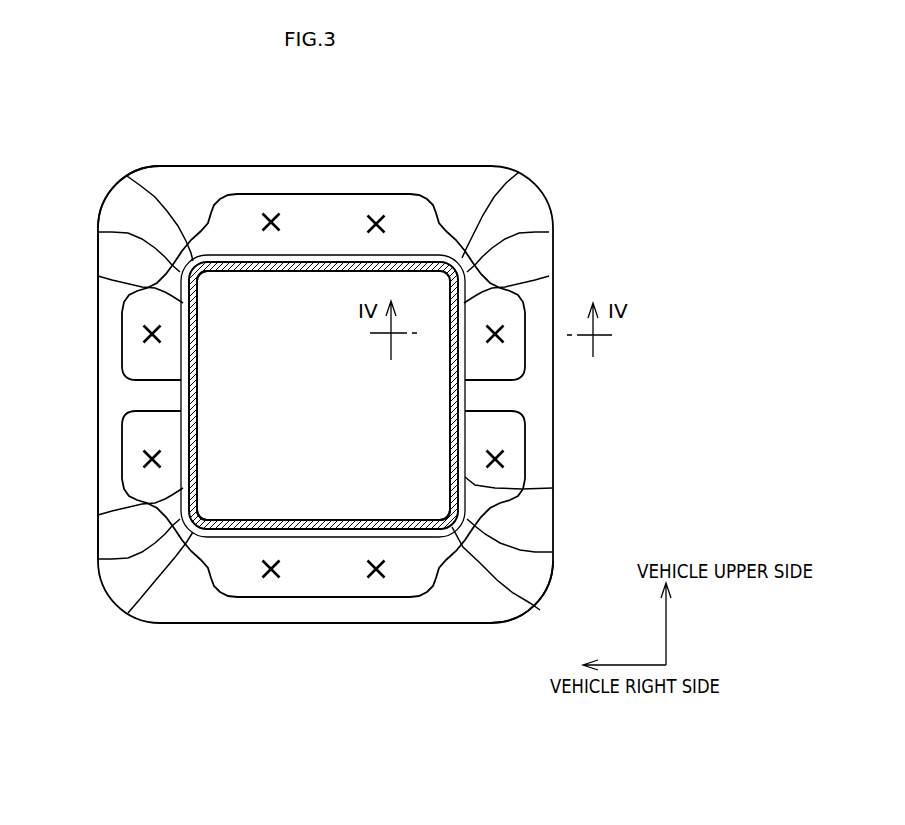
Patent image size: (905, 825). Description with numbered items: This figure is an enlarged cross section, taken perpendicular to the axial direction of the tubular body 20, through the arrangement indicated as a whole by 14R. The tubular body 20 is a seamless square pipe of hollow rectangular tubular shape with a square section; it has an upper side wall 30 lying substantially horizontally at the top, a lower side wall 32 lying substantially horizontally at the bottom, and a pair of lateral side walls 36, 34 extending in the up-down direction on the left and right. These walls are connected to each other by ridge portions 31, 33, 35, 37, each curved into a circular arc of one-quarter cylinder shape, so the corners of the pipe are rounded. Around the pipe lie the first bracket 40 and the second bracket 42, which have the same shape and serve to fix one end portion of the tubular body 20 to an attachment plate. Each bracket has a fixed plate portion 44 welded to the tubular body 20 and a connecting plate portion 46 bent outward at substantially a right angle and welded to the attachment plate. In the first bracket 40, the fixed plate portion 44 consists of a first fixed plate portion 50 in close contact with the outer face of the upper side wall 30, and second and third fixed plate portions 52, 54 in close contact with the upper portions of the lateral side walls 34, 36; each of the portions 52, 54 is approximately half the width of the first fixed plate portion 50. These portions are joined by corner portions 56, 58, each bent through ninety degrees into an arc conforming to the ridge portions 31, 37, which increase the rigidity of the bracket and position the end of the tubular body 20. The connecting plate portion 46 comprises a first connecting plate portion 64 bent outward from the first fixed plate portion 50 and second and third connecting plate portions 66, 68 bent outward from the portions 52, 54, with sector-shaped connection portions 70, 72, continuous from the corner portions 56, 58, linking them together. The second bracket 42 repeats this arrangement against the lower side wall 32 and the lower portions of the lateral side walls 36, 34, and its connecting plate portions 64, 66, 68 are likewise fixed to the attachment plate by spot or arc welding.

The right bracket plate 14R is at (601, 167).
The tubular body 20 is at (304, 258).
The upper side wall 30 is at (278, 272).
The ridge portion 31 is at (440, 276).
The lower side wall 32 is at (300, 520).
The ridge portion 33 is at (441, 518).
The lateral side wall 34 is at (450, 392).
The ridge portion 35 is at (202, 520).
The lateral side wall 36 is at (197, 389).
The ridge portion 37 is at (204, 274).
The first bracket 40 is at (467, 207).
The second bracket 42 is at (197, 596).
The fixed plate portion 44 is at (170, 352).
The connecting plate portion 46 is at (205, 208).
The first fixed plate portion 50 is at (344, 264).
The second fixed plate portion 52 is at (98, 515).
The third fixed plate portion 54 is at (98, 276).
The corner portion 56 is at (519, 172).
The corner portion 58 is at (127, 176).
The first connecting plate portion 64 is at (257, 217).
The second connecting plate portion 66 is at (133, 464).
The third connecting plate portion 68 is at (133, 330).
The sector-shaped connection portion 70 is at (549, 232).
The sector-shaped connection portion 72 is at (98, 232).